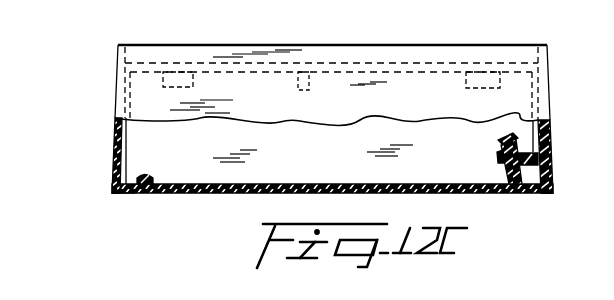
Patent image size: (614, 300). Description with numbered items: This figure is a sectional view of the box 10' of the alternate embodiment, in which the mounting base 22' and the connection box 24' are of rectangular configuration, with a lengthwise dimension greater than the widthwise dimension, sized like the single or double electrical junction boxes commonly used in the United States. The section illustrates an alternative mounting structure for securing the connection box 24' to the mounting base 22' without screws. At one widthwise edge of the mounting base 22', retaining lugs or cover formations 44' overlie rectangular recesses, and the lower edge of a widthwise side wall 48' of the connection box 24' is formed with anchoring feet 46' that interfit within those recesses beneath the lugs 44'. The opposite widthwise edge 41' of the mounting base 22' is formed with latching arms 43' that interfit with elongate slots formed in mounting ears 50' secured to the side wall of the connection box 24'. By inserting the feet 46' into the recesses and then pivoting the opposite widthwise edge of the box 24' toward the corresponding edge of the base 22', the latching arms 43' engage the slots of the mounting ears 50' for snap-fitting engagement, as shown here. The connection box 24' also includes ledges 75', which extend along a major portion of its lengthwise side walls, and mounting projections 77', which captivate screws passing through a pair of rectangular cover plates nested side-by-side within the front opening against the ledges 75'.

The box 10' is at (285, 132).
The mounting base 22' is at (332, 167).
The connection box 24' is at (572, 124).
The opposite widthwise edge 41' is at (537, 217).
The latching arms 43' is at (497, 155).
The retaining lugs 44' is at (169, 166).
The anchoring feet 46' is at (135, 213).
The widthwise side wall 48' is at (96, 140).
The mounting ears 50' is at (474, 163).
The ledges 75' is at (311, 92).
The mounting projections 77' is at (331, 92).